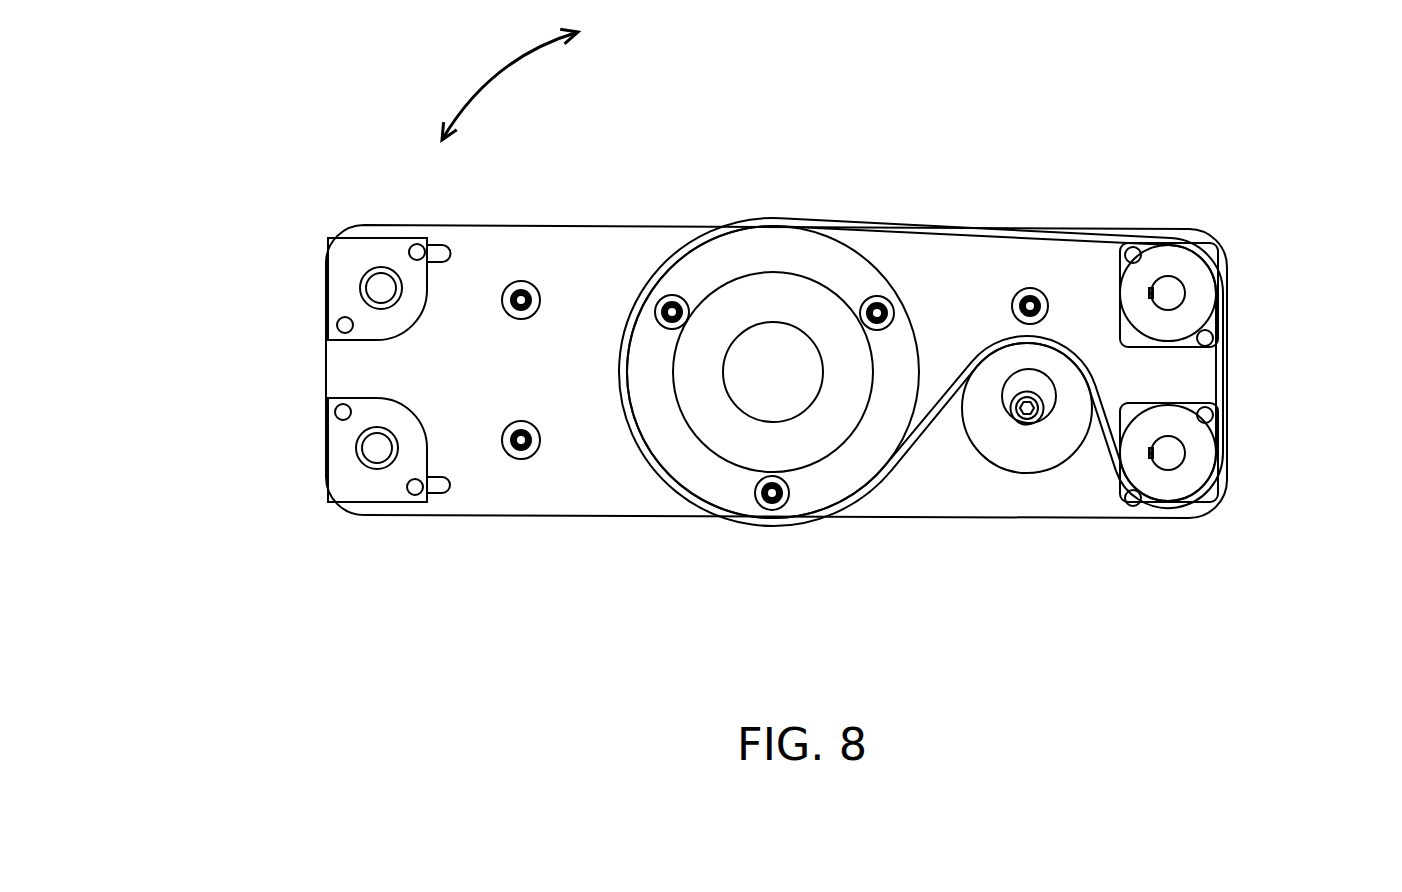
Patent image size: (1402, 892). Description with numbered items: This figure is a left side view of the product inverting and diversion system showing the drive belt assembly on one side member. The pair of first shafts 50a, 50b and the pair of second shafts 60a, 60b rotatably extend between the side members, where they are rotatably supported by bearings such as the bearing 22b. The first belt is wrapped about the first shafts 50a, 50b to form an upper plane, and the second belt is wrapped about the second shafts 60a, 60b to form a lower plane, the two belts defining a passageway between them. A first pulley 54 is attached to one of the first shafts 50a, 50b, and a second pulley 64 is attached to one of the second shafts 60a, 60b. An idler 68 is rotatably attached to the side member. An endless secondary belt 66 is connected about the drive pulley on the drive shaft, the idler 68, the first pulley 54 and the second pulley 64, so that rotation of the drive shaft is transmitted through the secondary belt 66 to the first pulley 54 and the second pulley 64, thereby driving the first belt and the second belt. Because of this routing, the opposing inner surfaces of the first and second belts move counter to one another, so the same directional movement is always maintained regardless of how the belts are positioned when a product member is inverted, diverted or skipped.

The bearing 22b is at (675, 371).
The first shaft 50a is at (333, 241).
The second shaft 60a is at (324, 482).
The first shaft 50b is at (1249, 225).
The second shaft 60b is at (1266, 491).
The first pulley 54 is at (1233, 297).
The second pulley 64 is at (1243, 451).
The secondary belt 66 is at (921, 307).
The idler 68 is at (992, 475).